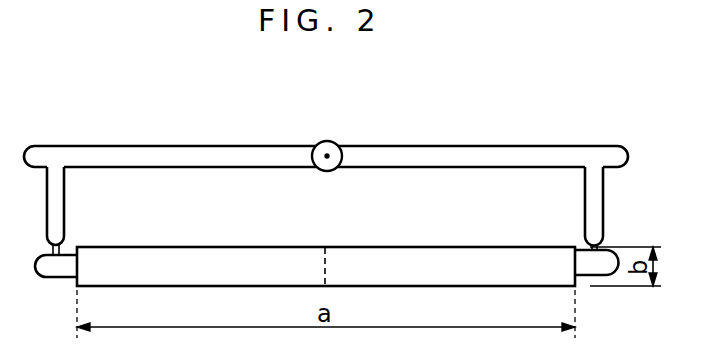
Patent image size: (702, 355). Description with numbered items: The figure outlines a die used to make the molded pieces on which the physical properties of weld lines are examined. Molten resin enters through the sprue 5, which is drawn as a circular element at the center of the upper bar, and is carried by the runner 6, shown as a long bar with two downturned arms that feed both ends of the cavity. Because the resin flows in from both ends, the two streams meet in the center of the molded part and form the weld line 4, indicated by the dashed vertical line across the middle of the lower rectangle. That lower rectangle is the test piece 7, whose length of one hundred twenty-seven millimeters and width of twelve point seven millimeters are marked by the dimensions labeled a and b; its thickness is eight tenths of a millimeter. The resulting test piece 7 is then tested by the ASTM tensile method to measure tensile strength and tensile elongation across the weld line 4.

The weld line 4 is at (327, 269).
The sprue 5 is at (337, 143).
The runner 6 is at (171, 146).
The test piece 7 is at (197, 255).